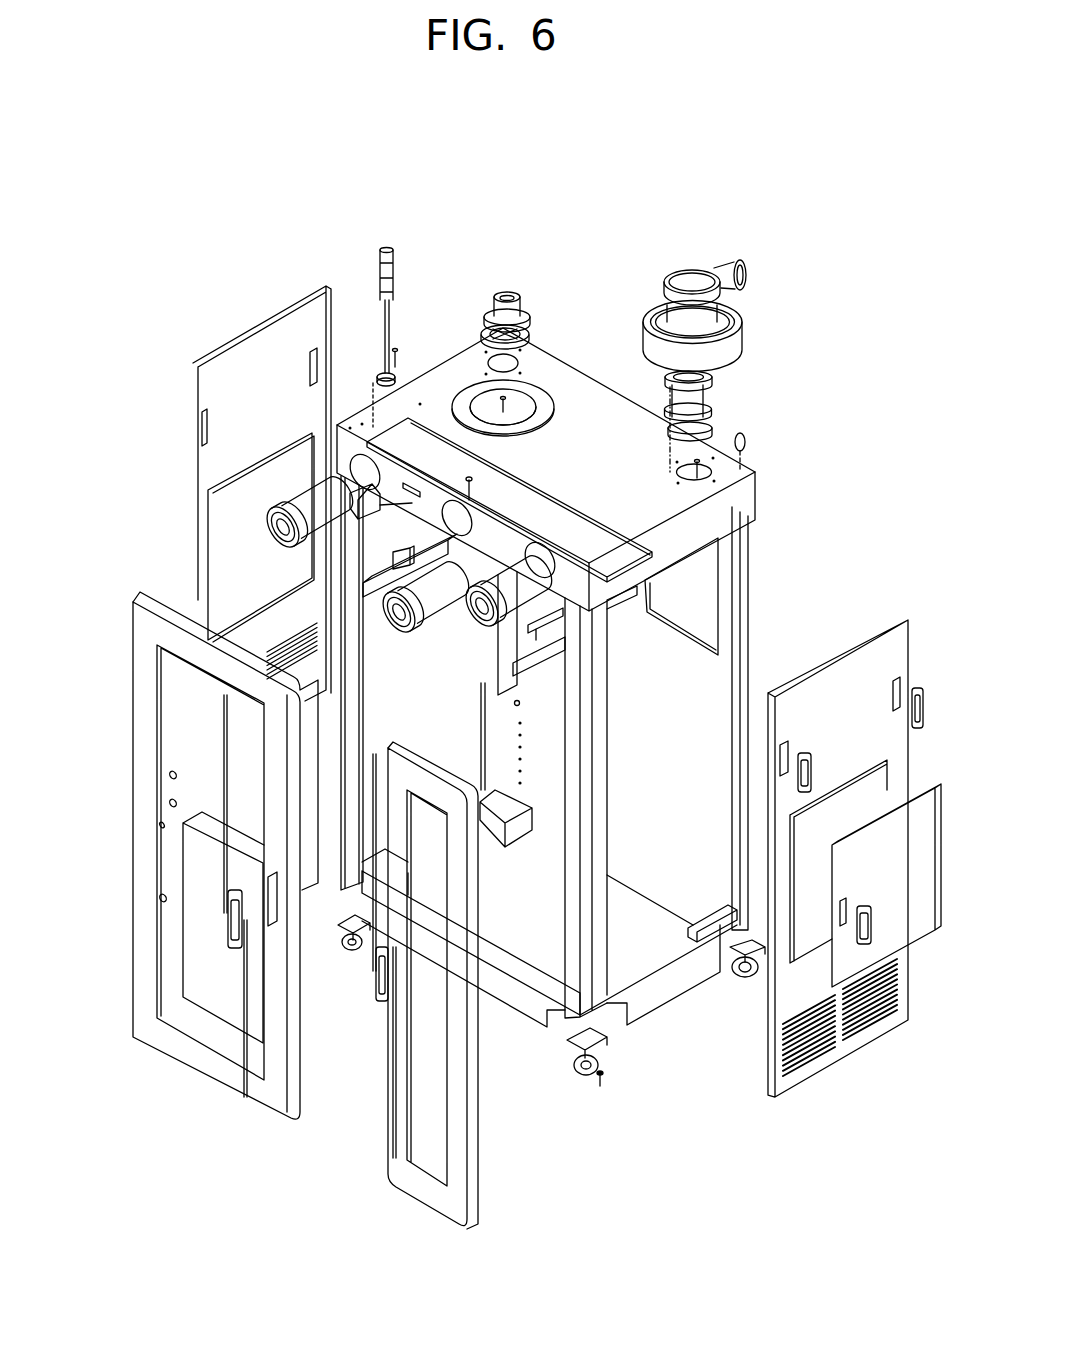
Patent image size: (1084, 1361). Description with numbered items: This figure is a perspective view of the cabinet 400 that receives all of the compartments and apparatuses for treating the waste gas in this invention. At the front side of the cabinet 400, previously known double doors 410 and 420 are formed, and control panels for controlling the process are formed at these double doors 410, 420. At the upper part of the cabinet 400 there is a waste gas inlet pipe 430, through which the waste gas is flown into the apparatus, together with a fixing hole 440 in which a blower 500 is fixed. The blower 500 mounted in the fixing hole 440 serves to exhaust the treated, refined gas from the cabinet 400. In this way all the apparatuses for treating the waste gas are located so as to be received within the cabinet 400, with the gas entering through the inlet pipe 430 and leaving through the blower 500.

The cabinet 400 is at (843, 344).
The double door 410 is at (146, 601).
The double door 420 is at (462, 1055).
The waste gas inlet pipe 430 is at (508, 290).
The fixing hole 440 is at (725, 488).
The blower 500 is at (690, 283).